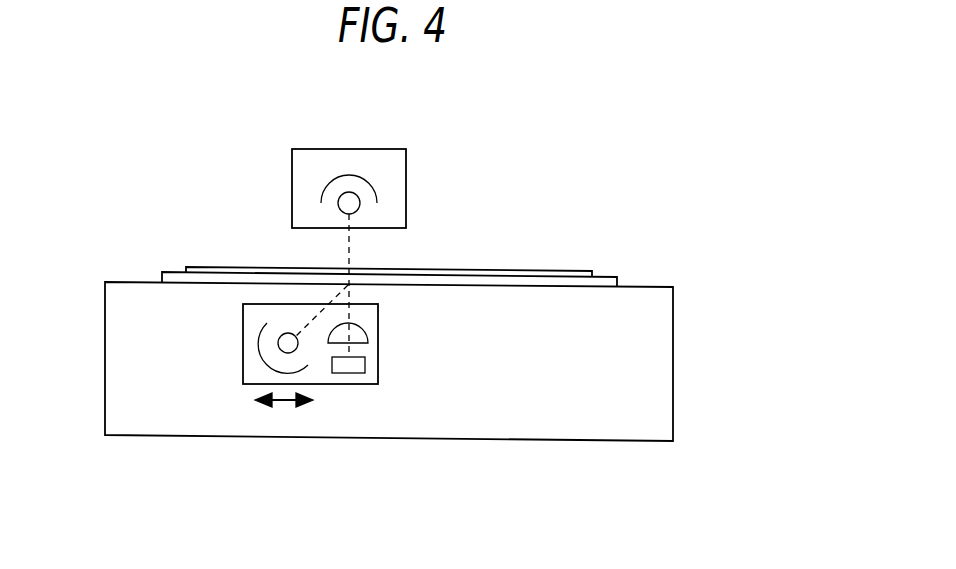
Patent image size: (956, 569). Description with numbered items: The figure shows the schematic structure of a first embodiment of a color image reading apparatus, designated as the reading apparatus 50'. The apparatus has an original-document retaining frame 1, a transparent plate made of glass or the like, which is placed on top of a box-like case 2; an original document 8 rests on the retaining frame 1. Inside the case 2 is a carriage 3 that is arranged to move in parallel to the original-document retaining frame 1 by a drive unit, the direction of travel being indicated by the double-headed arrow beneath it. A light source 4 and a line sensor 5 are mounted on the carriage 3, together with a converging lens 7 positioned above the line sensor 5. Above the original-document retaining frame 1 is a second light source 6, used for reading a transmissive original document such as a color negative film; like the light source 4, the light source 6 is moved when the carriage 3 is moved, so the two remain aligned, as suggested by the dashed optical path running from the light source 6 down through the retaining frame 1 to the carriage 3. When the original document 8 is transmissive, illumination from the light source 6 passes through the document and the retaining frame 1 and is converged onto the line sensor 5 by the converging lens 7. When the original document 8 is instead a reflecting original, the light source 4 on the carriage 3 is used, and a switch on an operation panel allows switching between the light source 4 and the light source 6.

The original-document retaining frame 1 is at (603, 276).
The case 2 is at (586, 443).
The carriage 3 is at (243, 378).
The light source 4 is at (278, 345).
The line sensor 5 is at (365, 366).
The light source 6 is at (338, 207).
The converging lens 7 is at (366, 335).
The original document 8 is at (504, 271).
The reading apparatus 50' is at (543, 146).